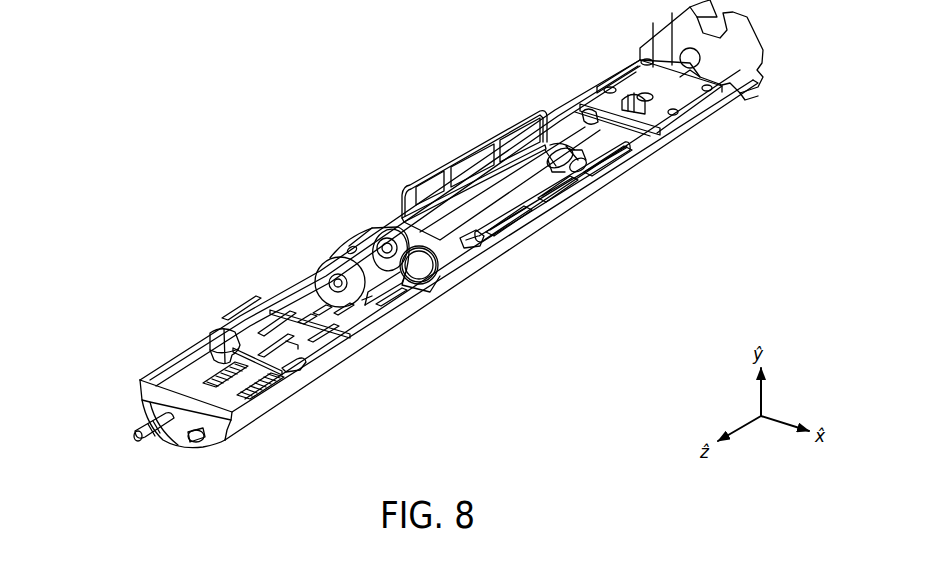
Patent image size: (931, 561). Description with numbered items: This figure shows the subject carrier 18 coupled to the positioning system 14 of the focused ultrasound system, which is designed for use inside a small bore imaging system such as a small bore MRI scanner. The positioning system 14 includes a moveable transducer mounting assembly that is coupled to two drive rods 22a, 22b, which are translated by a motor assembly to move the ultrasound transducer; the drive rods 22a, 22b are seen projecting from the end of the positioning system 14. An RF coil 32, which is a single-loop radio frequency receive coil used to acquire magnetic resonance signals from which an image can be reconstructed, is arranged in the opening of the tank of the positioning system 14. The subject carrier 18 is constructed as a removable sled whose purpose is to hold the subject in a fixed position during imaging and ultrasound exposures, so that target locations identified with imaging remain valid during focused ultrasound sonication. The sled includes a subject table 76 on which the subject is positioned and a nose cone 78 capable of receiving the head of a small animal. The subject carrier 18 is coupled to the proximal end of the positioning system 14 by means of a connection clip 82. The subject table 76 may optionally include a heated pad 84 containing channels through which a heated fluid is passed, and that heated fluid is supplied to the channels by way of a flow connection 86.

The positioning system 14 is at (238, 315).
The subject carrier 18 is at (358, 175).
The drive rod 22a is at (130, 427).
The drive rod 22b is at (200, 450).
The RF coil 32 is at (429, 287).
The subject table 76 is at (444, 166).
The nose cone 78 is at (353, 234).
The connection clip 82 is at (634, 88).
The heated pad 84 is at (471, 244).
The flow connection 86 is at (559, 140).